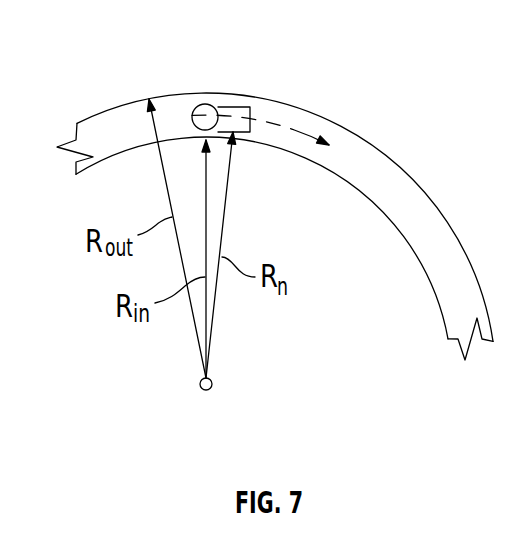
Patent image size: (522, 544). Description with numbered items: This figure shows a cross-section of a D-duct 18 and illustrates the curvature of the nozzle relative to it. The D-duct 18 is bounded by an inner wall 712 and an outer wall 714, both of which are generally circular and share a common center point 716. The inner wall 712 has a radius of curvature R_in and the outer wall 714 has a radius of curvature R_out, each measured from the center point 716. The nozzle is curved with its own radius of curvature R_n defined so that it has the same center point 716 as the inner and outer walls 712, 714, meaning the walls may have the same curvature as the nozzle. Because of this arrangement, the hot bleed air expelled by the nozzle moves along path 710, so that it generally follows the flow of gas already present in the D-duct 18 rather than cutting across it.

The D-duct 18 is at (275, 226).
The path 710 is at (298, 132).
The inner wall 712 is at (362, 193).
The outer wall 714 is at (427, 195).
The center point 716 is at (211, 381).